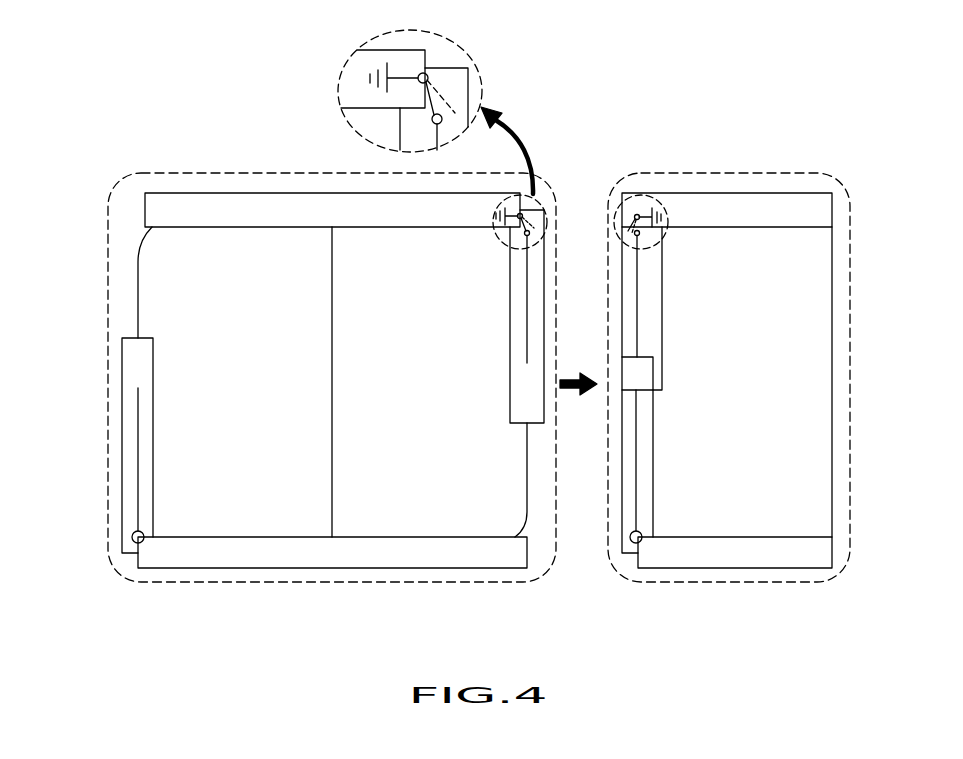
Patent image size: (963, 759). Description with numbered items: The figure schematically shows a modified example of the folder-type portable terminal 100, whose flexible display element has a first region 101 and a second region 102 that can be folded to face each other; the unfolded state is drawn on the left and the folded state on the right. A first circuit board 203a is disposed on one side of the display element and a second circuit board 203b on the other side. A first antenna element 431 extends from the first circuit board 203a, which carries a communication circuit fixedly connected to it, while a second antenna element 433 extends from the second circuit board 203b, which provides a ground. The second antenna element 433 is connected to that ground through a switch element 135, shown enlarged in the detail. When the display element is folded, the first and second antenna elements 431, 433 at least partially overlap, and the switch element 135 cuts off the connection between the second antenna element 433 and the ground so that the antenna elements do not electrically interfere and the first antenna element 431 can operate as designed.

The portable terminal 100 is at (100, 234).
The first region 101 is at (445, 517).
The second region 102 is at (242, 517).
The switch element 135 is at (540, 200).
The first circuit board 203a is at (352, 553).
The second circuit board 203b is at (230, 203).
The first antenna element 431 is at (140, 463).
The second antenna element 433 is at (527, 295).